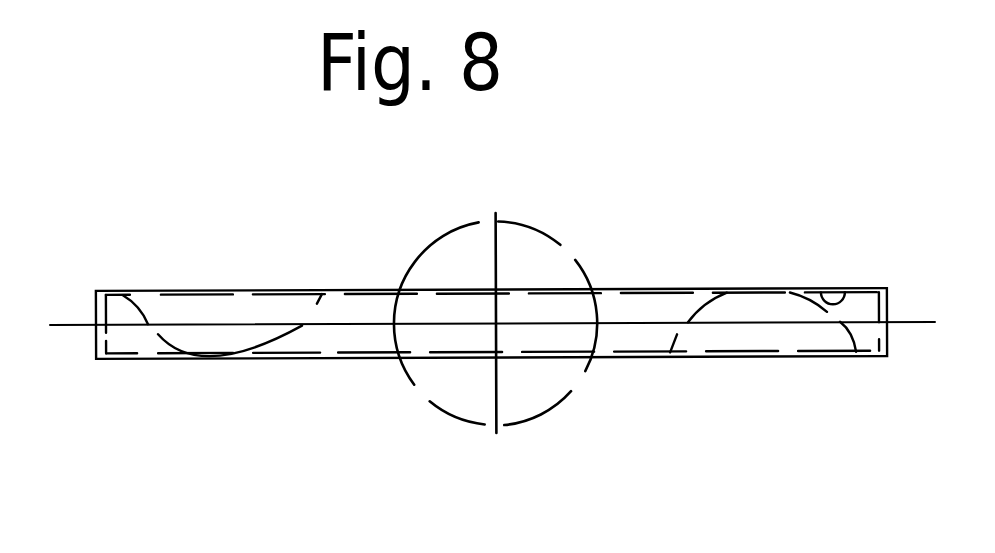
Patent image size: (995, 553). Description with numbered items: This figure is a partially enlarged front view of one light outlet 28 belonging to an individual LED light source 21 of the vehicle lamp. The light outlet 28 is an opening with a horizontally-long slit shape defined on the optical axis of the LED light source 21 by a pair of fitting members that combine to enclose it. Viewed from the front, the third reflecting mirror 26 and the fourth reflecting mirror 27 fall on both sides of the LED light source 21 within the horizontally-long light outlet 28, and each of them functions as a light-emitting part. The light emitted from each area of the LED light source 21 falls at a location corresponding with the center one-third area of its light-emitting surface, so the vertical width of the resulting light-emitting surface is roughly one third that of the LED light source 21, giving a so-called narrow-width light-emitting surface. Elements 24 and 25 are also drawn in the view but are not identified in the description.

The LED light source 21 is at (527, 310).
The first circular region 24 is at (520, 260).
The second circular region 25 is at (535, 392).
The third reflecting mirror 26 is at (803, 335).
The fourth reflecting mirror 27 is at (225, 337).
The light outlet 28 is at (847, 290).